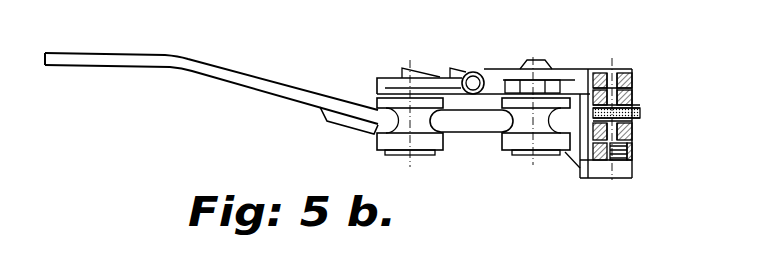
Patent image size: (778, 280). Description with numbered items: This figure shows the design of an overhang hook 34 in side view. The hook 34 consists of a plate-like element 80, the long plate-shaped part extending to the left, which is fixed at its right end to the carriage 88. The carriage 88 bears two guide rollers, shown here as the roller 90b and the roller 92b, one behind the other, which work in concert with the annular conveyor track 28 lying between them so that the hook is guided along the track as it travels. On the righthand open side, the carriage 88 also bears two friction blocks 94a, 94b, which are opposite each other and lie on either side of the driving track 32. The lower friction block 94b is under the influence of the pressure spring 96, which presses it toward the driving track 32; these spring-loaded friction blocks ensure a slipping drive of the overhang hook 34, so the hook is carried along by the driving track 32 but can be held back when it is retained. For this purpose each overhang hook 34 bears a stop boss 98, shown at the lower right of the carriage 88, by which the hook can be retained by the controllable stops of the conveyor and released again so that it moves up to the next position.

The plate-like element 80 is at (222, 78).
The overhang hook 34 is at (336, 135).
The carriage 88 is at (481, 61).
The guide roller 90b is at (424, 149).
The annular conveyor track 28 is at (479, 124).
The guide roller 92b is at (506, 150).
The stop boss 98 is at (581, 168).
The friction block 94a is at (632, 97).
The driving track 32 is at (641, 112).
The friction block 94b is at (638, 141).
The pressure spring 96 is at (612, 179).